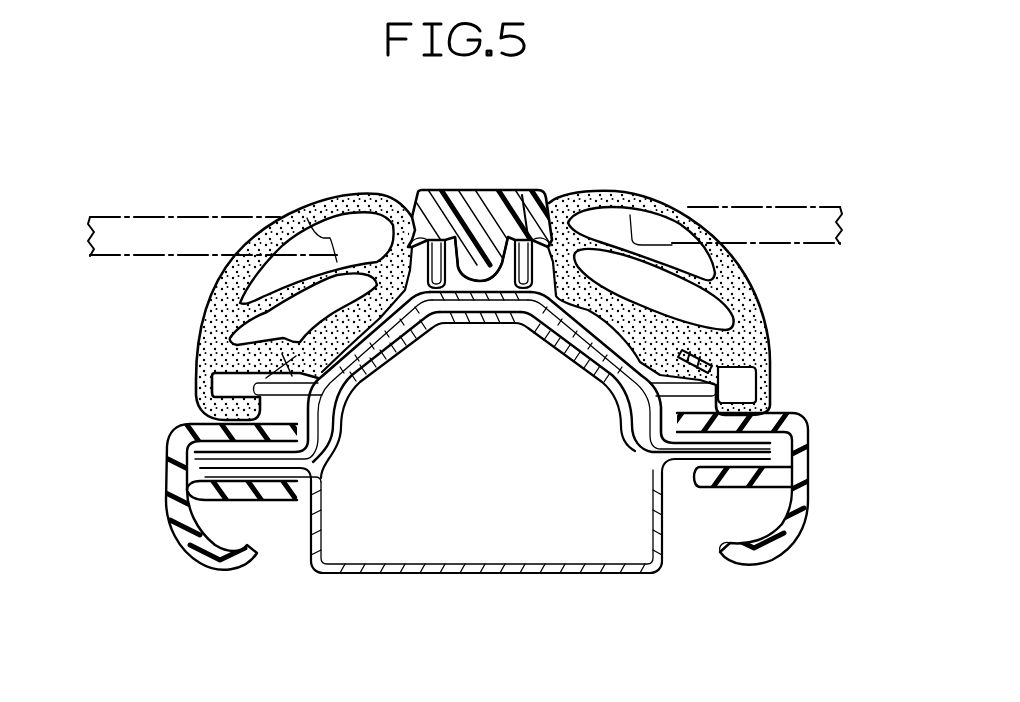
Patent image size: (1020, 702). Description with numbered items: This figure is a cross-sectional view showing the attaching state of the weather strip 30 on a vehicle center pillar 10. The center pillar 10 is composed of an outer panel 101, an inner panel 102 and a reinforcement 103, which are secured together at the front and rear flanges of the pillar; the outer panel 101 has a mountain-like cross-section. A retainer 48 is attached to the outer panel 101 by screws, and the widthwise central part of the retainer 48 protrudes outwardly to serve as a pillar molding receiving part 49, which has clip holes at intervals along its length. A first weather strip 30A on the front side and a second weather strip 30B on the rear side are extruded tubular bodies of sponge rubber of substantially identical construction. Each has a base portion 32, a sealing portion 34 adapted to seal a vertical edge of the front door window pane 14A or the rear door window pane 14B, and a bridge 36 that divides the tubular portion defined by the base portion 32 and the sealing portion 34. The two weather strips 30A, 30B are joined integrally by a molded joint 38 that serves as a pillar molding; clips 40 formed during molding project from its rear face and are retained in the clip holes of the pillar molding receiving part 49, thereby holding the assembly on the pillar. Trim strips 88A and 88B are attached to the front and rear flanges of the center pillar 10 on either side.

The center pillar 10 is at (540, 483).
The front door window pane 14A is at (202, 217).
The rear door window pane 14B is at (780, 207).
The weather strip 30 is at (470, 279).
The first weather strip 30A is at (247, 275).
The second weather strip 30B is at (721, 303).
The base portion 32 is at (400, 358).
The sealing portion 34 is at (220, 273).
The bridge 36 is at (300, 210).
The molded joint 38 is at (490, 187).
The clip 40 is at (447, 187).
The retainer 48 is at (353, 322).
The pillar molding receiving part 49 is at (523, 187).
The trim strip 88A is at (180, 506).
The trim strip 88B is at (790, 487).
The outer panel 101 is at (773, 378).
The inner panel 102 is at (398, 576).
The reinforcement 103 is at (345, 430).